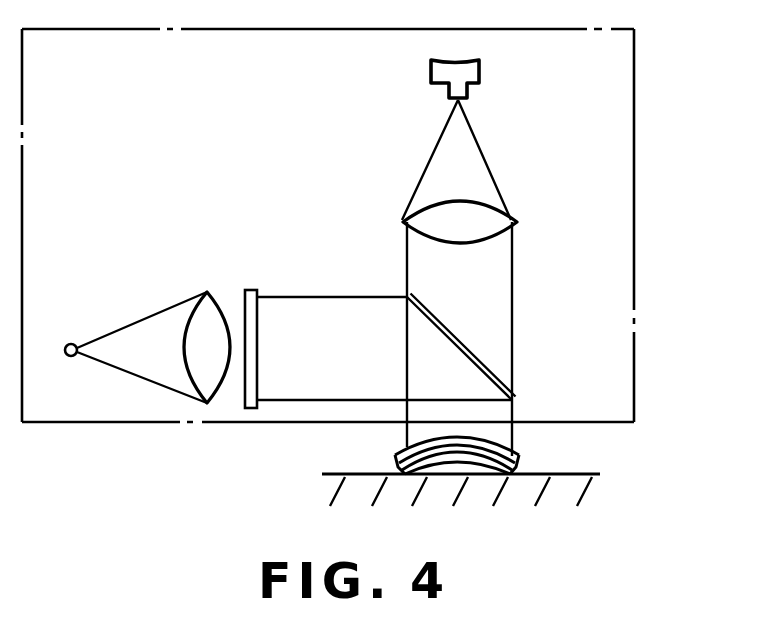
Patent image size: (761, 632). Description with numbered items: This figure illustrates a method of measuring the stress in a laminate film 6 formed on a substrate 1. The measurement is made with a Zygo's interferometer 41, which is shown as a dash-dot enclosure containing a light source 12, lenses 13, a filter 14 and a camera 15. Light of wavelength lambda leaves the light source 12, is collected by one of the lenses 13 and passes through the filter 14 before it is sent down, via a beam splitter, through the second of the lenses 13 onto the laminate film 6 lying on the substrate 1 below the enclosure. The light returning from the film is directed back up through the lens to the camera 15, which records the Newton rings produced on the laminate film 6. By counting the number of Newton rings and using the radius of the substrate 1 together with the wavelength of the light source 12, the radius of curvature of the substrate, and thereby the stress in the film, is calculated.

The Zygo's interferometer 41 is at (635, 215).
The light source 12 is at (70, 343).
The lenses 13 is at (207, 292).
The filter 14 is at (256, 289).
The camera 15 is at (481, 68).
The laminate film 6 is at (484, 446).
The substrate 1 is at (520, 468).